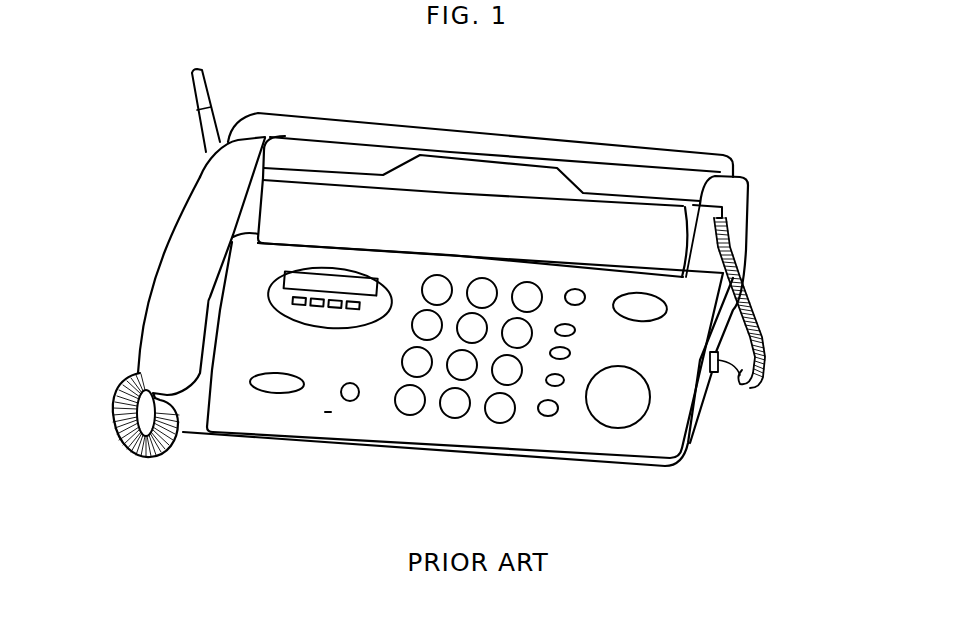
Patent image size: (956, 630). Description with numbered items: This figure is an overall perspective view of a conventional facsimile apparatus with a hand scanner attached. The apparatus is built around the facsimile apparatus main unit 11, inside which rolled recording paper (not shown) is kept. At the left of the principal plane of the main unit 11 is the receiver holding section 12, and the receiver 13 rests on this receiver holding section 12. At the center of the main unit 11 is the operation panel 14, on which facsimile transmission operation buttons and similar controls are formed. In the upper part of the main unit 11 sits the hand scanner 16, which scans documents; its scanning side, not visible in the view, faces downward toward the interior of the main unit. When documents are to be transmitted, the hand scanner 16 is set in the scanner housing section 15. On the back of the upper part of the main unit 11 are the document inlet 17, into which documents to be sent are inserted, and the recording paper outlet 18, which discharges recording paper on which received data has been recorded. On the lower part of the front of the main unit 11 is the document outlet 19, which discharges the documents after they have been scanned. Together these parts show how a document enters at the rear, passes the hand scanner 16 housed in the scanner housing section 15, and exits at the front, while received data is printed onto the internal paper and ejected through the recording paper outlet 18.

The facsimile apparatus main unit 11 is at (712, 420).
The receiver holding section 12 is at (190, 395).
The receiver 13 is at (192, 222).
The operation panel 14 is at (467, 433).
The scanner housing section 15 is at (673, 204).
The hand scanner 16 is at (608, 217).
The document inlet 17 is at (357, 141).
The recording paper outlet 18 is at (493, 134).
The document outlet 19 is at (574, 469).